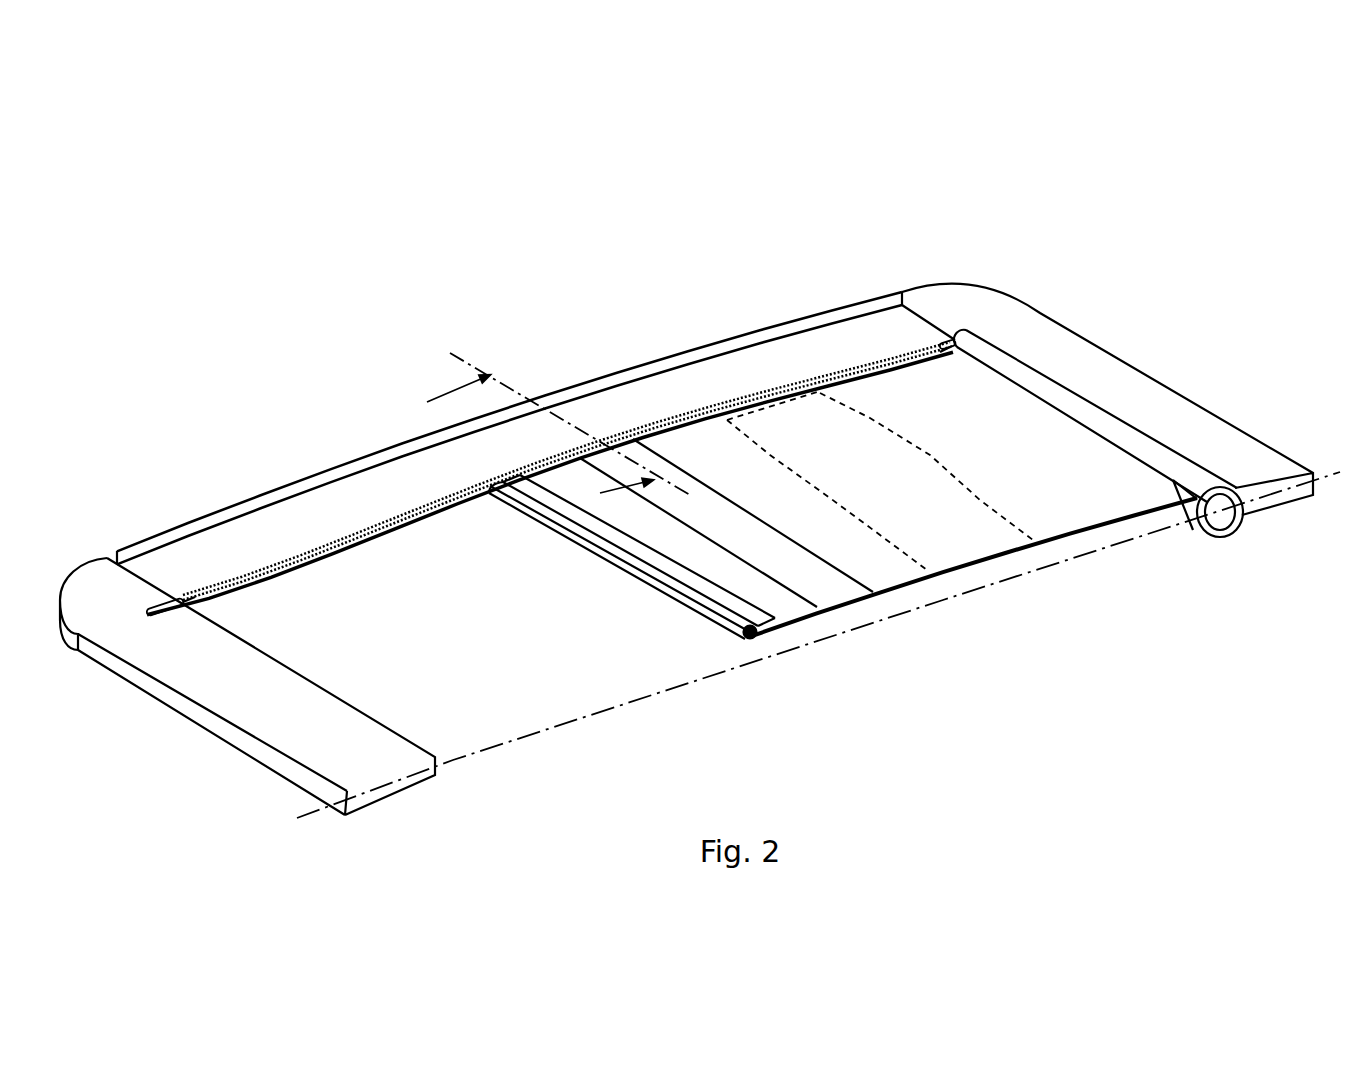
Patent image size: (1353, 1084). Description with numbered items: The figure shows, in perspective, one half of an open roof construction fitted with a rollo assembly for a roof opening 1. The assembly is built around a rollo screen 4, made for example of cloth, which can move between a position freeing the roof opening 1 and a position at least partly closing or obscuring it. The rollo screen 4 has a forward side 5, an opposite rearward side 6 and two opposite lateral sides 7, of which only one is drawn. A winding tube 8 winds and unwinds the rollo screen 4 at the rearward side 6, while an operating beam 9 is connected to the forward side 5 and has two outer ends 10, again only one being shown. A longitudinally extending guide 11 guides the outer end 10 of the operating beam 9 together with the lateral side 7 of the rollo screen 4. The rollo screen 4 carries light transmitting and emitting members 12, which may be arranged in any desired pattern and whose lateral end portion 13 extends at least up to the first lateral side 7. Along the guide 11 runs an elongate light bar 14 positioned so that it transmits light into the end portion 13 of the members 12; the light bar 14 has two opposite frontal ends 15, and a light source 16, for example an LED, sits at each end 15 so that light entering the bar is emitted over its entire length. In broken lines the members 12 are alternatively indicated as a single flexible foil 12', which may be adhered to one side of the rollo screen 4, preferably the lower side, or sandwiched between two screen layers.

The roof opening 1 is at (548, 657).
The rollo screen 4 is at (1023, 517).
The forward side 5 is at (748, 614).
The rearward side 6 is at (1173, 482).
The lateral sides 7 is at (705, 417).
The winding tube 8 is at (1127, 433).
The operating beam 9 is at (760, 640).
The outer ends 10 is at (503, 473).
The guides 11 is at (358, 497).
The light transmitting and emitting members 12 is at (878, 516).
The foil 12' is at (976, 517).
The lateral end portion 13 is at (600, 450).
The elongate light bar 14 is at (636, 423).
The frontal ends 15 is at (188, 595).
The light source 16 is at (152, 612).